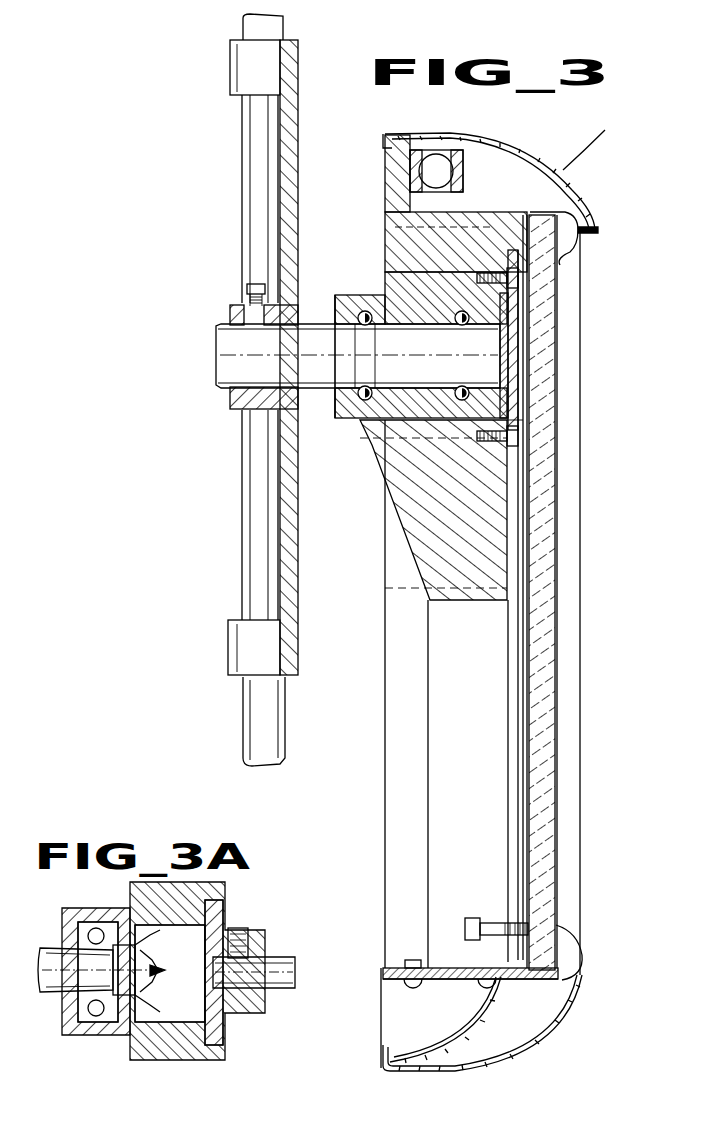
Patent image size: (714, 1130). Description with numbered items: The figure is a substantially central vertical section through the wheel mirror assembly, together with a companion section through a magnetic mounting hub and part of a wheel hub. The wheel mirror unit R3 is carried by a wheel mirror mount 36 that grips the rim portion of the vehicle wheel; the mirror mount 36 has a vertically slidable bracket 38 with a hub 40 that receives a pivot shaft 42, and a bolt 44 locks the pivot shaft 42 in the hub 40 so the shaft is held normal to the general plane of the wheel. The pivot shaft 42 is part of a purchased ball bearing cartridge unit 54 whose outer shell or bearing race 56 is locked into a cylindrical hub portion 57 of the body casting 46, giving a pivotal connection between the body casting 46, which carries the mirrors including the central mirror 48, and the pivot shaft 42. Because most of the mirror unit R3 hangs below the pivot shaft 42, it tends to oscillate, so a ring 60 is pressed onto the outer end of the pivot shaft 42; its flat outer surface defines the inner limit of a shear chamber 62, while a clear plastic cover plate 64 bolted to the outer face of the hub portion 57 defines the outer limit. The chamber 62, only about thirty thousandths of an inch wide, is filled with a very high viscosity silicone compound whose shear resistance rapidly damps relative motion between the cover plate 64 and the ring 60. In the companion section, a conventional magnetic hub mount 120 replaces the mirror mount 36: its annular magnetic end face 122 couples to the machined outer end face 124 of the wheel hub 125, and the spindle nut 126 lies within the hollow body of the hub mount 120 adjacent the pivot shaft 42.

In FIG. 3, the wheel mirror mount 36 is at (245, 542).
In FIG. 3, the vertically slidable bracket 38 is at (292, 508).
In FIG. 3, the hub 40 is at (237, 404).
In FIG. 3, the pivot shaft 42 is at (226, 349).
In FIG. 3A, the pivot shaft 42 is at (285, 962).
In FIG. 3, the bolt 44 is at (246, 284).
In FIG. 3, the body casting 46 is at (426, 550).
In FIG. 3, the central mirror 48 is at (585, 507).
In FIG. 3, the ball bearing cartridge unit 54 is at (320, 324).
In FIG. 3, the outer shell or bearing race 56 is at (343, 412).
In FIG. 3, the cylindrical hub portion 57 is at (387, 272).
In FIG. 3, the ring 60 is at (520, 301).
In FIG. 3, the shear chamber 62 is at (505, 340).
In FIG. 3, the clear plastic cover plate 64 is at (522, 382).
In FIG. 3, the wheel mirror unit R3 is at (602, 139).
In FIG. 3A, the magnetic hub mount 120 is at (210, 874).
In FIG. 3A, the annular magnetic end face 122 is at (128, 900).
In FIG. 3A, the machined outer end face 124 is at (148, 1045).
In FIG. 3A, the wheel hub 125 is at (80, 1036).
In FIG. 3A, the spindle nut 126 is at (171, 971).